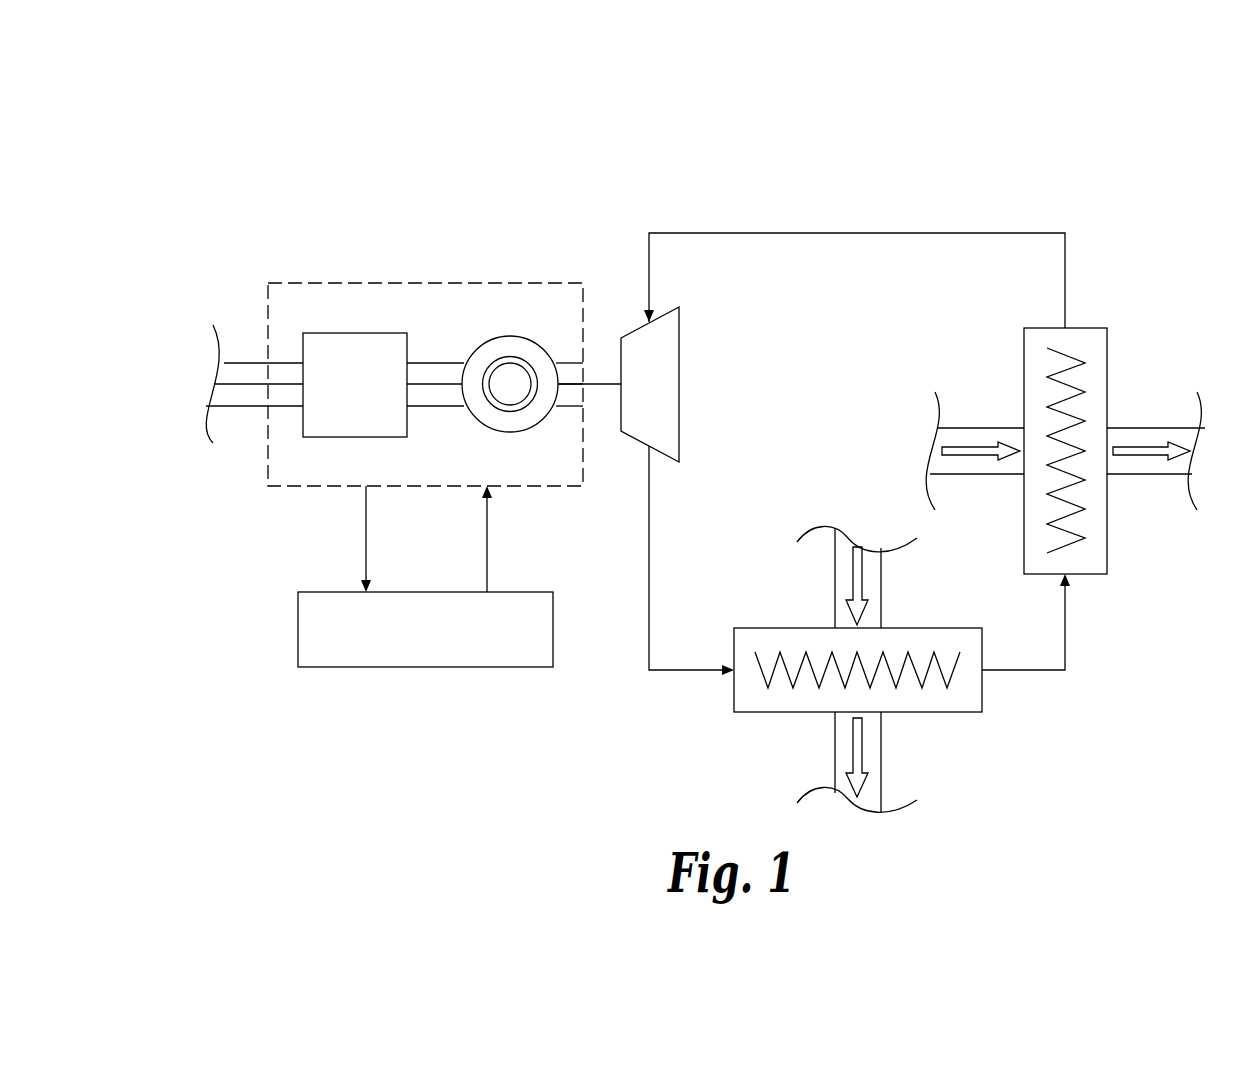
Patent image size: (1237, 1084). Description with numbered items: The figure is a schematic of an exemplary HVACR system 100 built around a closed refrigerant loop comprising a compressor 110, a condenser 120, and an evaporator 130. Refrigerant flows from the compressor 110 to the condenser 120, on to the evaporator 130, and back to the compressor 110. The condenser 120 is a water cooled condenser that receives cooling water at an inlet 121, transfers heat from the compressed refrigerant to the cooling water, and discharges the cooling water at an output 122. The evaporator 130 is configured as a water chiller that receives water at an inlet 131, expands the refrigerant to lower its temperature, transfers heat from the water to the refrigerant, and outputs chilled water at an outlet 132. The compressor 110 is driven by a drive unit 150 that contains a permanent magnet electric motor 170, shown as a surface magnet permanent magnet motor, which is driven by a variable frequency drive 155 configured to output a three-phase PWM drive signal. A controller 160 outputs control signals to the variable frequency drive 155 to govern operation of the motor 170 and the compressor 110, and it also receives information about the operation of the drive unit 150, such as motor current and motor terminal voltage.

The HVACR system 100 is at (1084, 156).
The compressor 110 is at (680, 348).
The condenser 120 is at (927, 628).
The inlet 121 is at (835, 580).
The output 122 is at (881, 763).
The evaporator 130 is at (1100, 327).
The inlet 131 is at (970, 428).
The outlet 132 is at (1153, 428).
The drive unit 150 is at (390, 283).
The variable frequency drive 155 is at (313, 332).
The controller 160 is at (418, 668).
The permanent magnet electric motor 170 is at (474, 345).